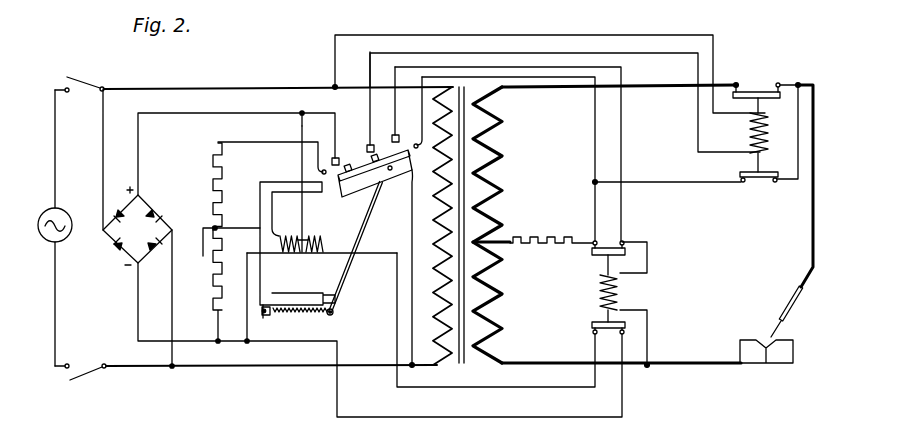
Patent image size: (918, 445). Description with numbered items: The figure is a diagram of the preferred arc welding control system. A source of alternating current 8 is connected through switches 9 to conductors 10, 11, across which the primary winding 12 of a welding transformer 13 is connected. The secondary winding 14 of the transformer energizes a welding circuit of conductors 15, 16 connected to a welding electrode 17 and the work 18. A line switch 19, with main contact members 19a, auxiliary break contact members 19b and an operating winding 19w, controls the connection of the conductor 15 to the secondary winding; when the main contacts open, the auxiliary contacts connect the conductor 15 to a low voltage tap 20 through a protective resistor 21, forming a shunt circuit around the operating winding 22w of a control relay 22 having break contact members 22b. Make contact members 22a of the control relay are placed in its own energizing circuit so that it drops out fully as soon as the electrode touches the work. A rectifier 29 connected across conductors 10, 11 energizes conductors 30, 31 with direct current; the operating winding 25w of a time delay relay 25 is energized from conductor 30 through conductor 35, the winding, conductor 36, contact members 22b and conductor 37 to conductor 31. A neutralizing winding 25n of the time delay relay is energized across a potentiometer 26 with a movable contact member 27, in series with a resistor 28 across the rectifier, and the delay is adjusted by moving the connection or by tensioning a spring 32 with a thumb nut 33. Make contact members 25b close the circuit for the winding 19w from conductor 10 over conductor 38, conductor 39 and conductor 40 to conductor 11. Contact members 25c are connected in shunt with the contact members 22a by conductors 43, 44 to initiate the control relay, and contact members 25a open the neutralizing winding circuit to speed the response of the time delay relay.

The source of alternating current 8 is at (64, 209).
The switches 9 is at (88, 83).
The conductor 10 is at (213, 81).
The conductor 11 is at (142, 372).
The primary winding 12 is at (435, 226).
The welding transformer 13 is at (466, 82).
The secondary winding 14 is at (503, 160).
The conductor 15 is at (811, 223).
The conductor 16 is at (687, 363).
The welding electrode 17 is at (771, 334).
The work 18 is at (753, 357).
The line switch 19 is at (761, 61).
The main contact members 19a is at (755, 90).
The auxiliary break contact members 19b is at (760, 187).
The operating winding 19w is at (751, 135).
The low voltage tap 20 is at (487, 245).
The protective resistor 21 is at (553, 237).
The control relay 22 is at (586, 262).
The make contact members 22a is at (593, 240).
The break contact members 22b is at (608, 332).
The operating winding 22w is at (620, 297).
The time delay relay 25 is at (253, 178).
The contact members 25a is at (342, 156).
The make contact members 25b is at (376, 146).
The contact members 25c is at (402, 141).
The neutralizing winding 25n is at (288, 234).
The operating winding 25w is at (320, 234).
The potentiometer 26 is at (223, 243).
The movable contact member 27 is at (210, 258).
The resistor 28 is at (213, 178).
The rectifier 29 is at (137, 226).
The conductor 30 is at (279, 141).
The conductor 31 is at (327, 340).
The spring 32 is at (300, 313).
The thumb nut 33 is at (263, 316).
The conductor 35 is at (302, 168).
The conductor 36 is at (475, 388).
The conductor 37 is at (337, 398).
The conductor 38 is at (550, 33).
The conductor 39 is at (579, 52).
The conductor 40 is at (412, 233).
The conductor 43 is at (595, 118).
The conductor 44 is at (623, 128).